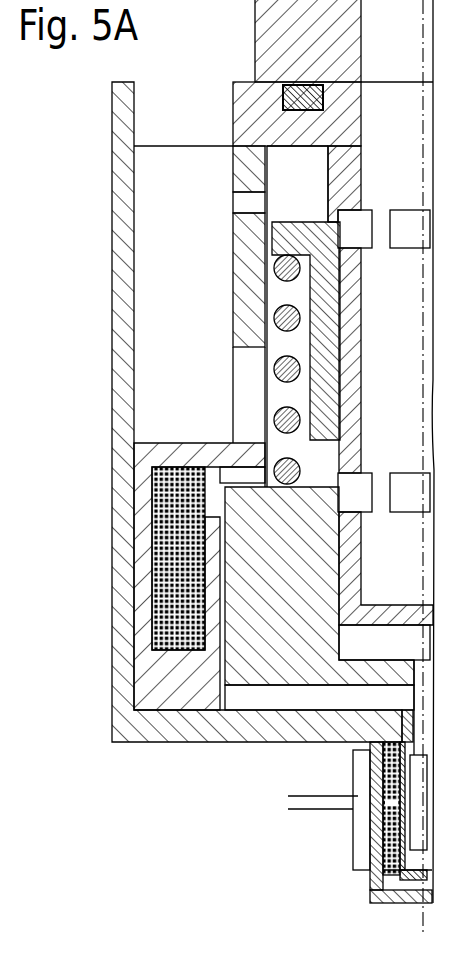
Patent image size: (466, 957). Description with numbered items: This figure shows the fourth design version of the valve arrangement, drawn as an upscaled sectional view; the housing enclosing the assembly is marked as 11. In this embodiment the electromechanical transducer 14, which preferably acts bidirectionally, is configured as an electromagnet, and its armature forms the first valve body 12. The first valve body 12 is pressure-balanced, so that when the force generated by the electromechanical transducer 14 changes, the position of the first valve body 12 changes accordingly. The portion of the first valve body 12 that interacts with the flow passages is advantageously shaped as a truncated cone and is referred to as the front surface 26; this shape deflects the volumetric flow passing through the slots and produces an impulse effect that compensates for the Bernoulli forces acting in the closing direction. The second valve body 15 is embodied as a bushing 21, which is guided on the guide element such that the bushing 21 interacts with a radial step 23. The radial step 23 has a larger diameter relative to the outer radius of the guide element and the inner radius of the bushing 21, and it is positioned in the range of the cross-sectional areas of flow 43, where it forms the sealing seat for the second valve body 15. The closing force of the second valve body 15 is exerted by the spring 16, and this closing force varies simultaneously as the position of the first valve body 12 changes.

The electromagnetic actuator housing 11 is at (80, 200).
The first valve body 12 is at (289, 660).
The electromechanical transducer 14 is at (140, 615).
The second valve body 15 is at (297, 292).
The spring 16 is at (283, 377).
The bushing 21 is at (310, 338).
The radial step 23 is at (352, 158).
The front surface 26 is at (333, 492).
The cross-sectional areas of flow 43 is at (465, 191).